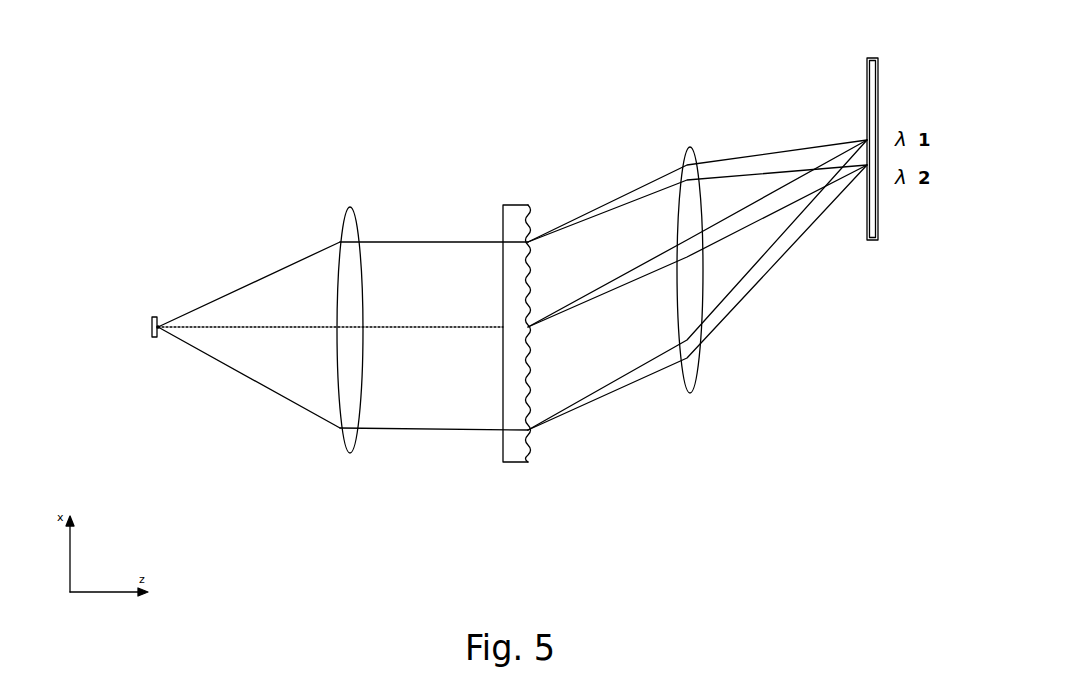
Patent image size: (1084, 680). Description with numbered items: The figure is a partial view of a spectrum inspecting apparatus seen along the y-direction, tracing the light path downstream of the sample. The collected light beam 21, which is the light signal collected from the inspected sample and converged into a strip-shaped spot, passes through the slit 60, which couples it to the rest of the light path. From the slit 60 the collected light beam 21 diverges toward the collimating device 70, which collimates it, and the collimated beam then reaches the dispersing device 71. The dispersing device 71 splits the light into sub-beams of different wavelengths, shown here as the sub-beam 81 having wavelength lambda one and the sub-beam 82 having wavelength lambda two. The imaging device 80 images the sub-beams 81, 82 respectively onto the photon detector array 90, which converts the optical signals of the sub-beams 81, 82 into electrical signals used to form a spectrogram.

The collected light beam 21 is at (233, 290).
The slit 60 is at (151, 339).
The collimating device 70 is at (347, 447).
The dispersing device 71 is at (513, 455).
The imaging device 80 is at (692, 380).
The sub-beam 81 is at (773, 150).
The sub-beam 82 is at (793, 237).
The photon detector array 90 is at (873, 233).